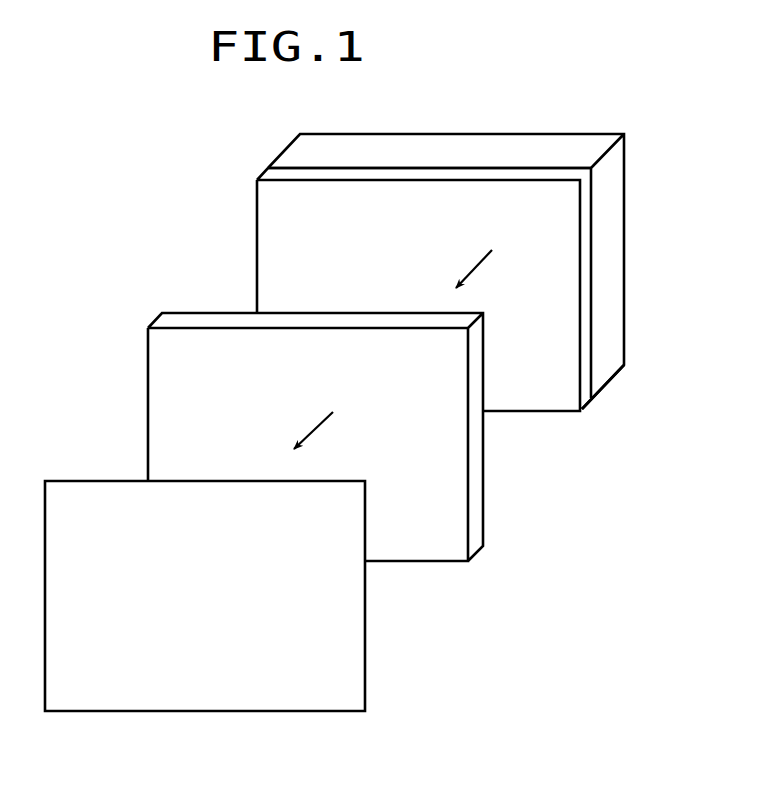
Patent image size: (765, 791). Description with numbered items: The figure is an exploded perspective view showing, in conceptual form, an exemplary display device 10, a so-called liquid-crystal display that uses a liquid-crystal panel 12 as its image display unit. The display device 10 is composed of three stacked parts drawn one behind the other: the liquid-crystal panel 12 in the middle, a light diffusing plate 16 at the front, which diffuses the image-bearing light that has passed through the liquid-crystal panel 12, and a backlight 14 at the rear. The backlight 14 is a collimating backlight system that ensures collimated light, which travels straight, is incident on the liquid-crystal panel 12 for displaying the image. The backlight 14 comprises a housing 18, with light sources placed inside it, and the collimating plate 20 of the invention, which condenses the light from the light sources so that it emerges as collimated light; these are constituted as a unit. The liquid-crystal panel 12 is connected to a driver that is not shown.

The display device 10 is at (104, 236).
The liquid-crystal panel 12 is at (445, 547).
The backlight 14 is at (581, 96).
The light diffusing plate 16 is at (315, 682).
The housing 18 is at (442, 157).
The collimating plate 20 is at (588, 390).